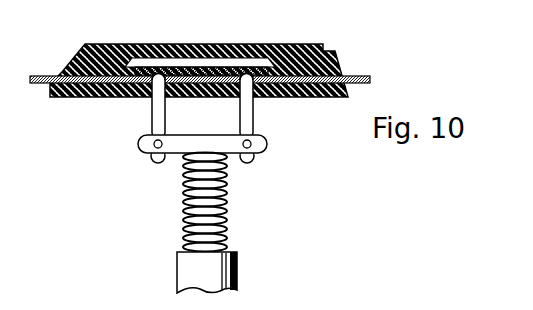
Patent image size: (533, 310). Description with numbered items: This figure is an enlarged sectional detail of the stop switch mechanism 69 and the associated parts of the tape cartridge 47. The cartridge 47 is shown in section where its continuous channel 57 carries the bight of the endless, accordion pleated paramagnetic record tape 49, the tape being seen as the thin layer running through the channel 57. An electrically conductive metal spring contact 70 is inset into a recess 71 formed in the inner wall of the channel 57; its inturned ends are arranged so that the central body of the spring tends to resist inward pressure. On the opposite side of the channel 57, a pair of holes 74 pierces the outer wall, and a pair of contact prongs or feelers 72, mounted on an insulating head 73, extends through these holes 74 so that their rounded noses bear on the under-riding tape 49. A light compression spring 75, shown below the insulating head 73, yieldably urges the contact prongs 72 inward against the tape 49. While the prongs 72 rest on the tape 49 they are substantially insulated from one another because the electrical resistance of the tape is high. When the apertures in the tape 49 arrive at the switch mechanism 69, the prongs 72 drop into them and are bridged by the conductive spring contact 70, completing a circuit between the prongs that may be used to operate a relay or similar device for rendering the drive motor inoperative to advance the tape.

The cartridge 47 is at (91, 102).
The paramagnetic record tape 49 is at (358, 76).
The channel 57 is at (315, 95).
The switch mechanism 69 is at (266, 160).
The spring contact 70 is at (186, 67).
The recess 71 is at (220, 47).
The contact prongs 72 is at (197, 129).
The insulating head 73 is at (178, 152).
The holes 74 is at (148, 96).
The compression spring 75 is at (228, 211).